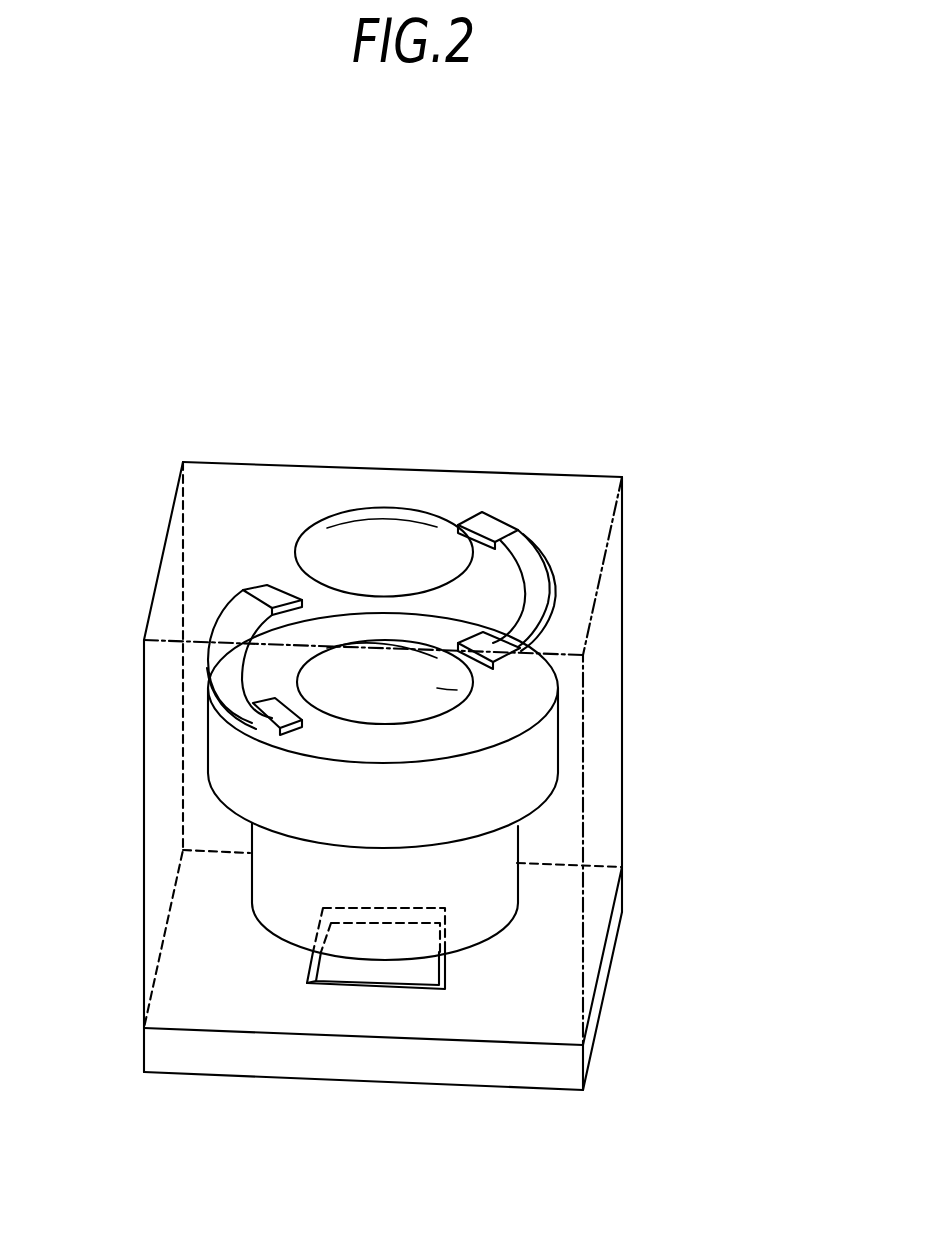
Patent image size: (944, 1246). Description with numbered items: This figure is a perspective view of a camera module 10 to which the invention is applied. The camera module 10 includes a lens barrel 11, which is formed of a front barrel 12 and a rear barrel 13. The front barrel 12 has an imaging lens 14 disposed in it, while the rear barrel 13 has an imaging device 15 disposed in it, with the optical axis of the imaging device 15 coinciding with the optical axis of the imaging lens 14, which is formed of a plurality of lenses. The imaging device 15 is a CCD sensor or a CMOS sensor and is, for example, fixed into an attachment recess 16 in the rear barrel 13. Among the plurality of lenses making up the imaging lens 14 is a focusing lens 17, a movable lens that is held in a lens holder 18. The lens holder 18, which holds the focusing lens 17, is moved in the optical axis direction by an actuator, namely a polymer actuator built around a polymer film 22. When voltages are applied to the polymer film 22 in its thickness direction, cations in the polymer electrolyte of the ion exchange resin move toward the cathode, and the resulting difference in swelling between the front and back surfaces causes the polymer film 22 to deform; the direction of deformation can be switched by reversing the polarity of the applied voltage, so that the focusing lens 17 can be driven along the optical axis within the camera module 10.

The camera module 10 is at (311, 378).
The lens barrel 11 is at (772, 827).
The front barrel 12 is at (598, 833).
The rear barrel 13 is at (593, 1008).
The imaging lens 14 is at (421, 535).
The imaging device 15 is at (397, 968).
The attachment recess 16 is at (312, 975).
The focusing lens 17 is at (437, 690).
The lens holder 18 is at (502, 723).
The polymer film 22 is at (550, 552).